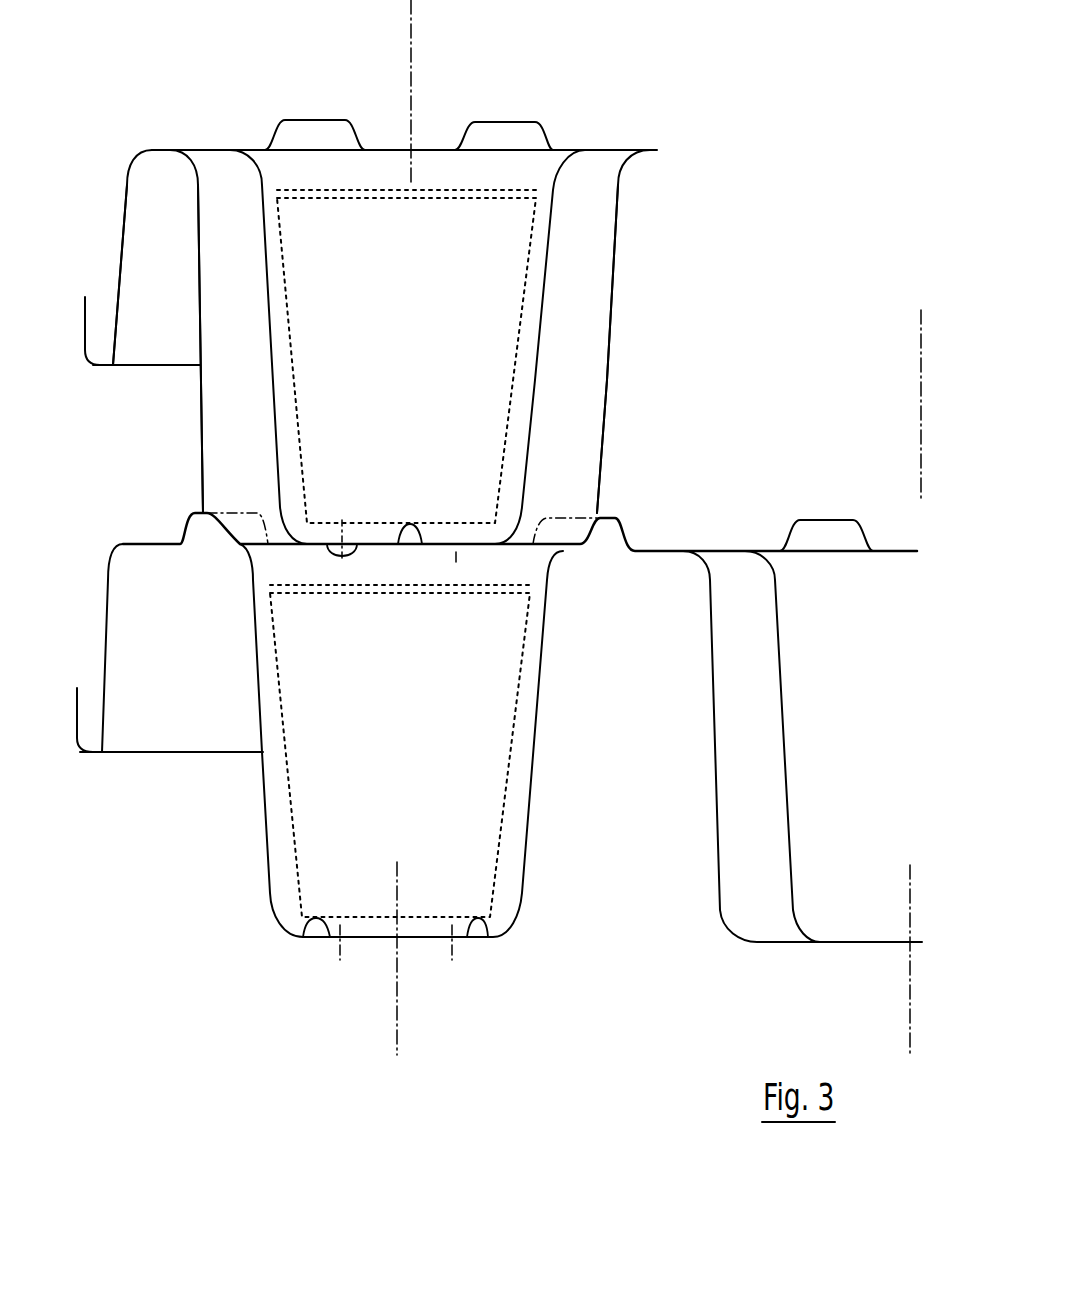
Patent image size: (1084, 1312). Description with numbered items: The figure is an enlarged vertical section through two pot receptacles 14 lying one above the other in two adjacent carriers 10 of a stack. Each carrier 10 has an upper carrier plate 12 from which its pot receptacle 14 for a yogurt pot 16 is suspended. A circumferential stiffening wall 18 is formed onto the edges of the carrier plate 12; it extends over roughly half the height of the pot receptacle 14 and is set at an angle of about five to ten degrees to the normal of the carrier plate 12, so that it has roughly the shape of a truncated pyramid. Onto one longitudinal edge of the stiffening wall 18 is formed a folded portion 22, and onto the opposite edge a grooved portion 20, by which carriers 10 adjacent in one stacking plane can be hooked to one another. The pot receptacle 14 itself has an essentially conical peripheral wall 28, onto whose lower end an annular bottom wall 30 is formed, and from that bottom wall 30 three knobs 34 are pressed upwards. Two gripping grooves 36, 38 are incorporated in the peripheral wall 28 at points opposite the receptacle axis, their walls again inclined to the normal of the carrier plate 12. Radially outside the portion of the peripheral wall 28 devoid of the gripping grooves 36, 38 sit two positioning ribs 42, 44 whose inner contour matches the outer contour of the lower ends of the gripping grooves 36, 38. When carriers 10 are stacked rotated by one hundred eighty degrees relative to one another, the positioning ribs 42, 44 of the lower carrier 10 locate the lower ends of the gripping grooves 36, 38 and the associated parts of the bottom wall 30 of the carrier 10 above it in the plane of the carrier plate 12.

The carrier 10 is at (600, 190).
The carrier plate 12 is at (683, 548).
The pot receptacle 14 is at (483, 232).
The yogurt pot 16 is at (520, 284).
The stiffening wall 18 is at (125, 215).
The grooved portion 20 is at (87, 330).
The folded portion 22 is at (80, 716).
The peripheral wall 28 is at (405, 367).
The annular bottom wall 30 is at (327, 540).
The knob 34 is at (410, 523).
The gripping groove 36 is at (235, 403).
The gripping groove 38 is at (585, 383).
The positioning rib 42 is at (302, 130).
The positioning rib 44 is at (497, 138).